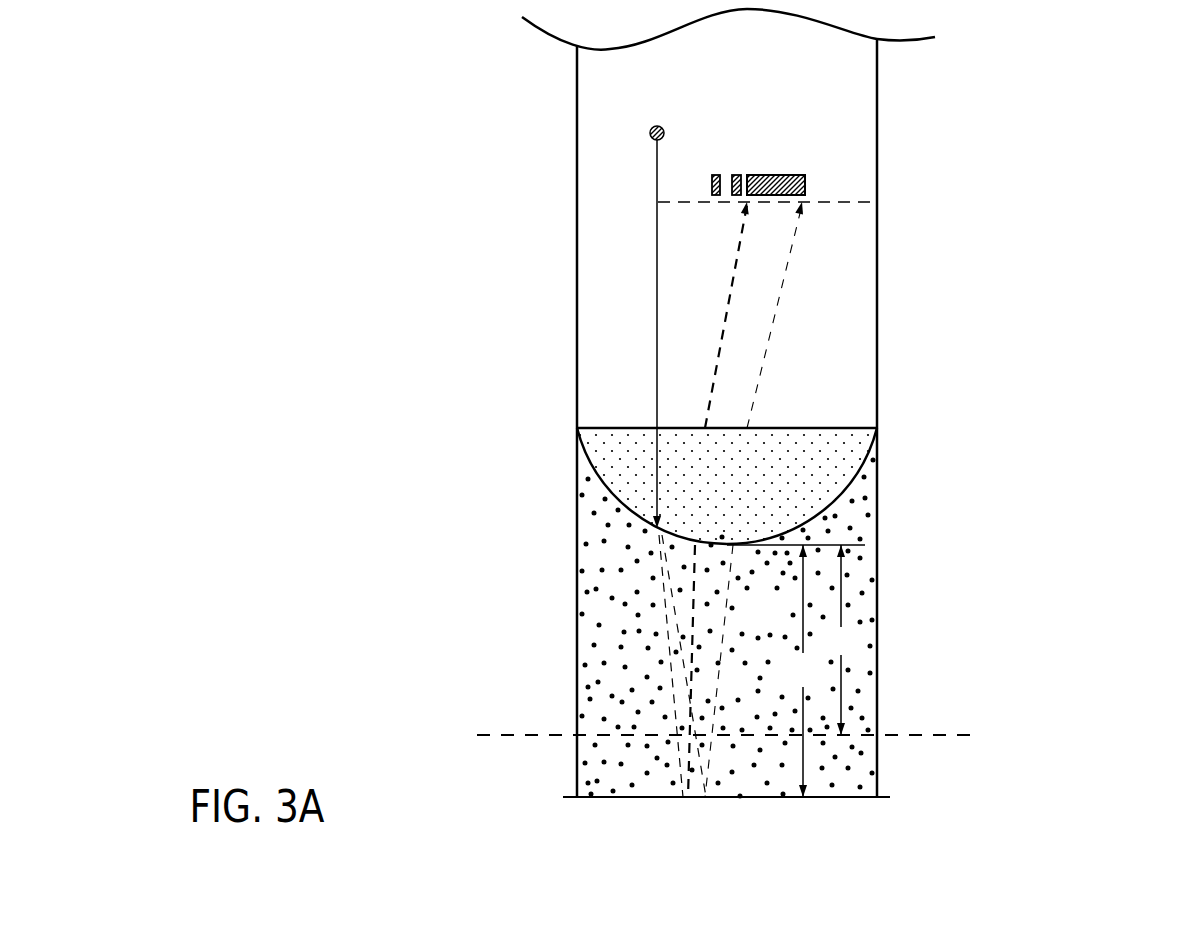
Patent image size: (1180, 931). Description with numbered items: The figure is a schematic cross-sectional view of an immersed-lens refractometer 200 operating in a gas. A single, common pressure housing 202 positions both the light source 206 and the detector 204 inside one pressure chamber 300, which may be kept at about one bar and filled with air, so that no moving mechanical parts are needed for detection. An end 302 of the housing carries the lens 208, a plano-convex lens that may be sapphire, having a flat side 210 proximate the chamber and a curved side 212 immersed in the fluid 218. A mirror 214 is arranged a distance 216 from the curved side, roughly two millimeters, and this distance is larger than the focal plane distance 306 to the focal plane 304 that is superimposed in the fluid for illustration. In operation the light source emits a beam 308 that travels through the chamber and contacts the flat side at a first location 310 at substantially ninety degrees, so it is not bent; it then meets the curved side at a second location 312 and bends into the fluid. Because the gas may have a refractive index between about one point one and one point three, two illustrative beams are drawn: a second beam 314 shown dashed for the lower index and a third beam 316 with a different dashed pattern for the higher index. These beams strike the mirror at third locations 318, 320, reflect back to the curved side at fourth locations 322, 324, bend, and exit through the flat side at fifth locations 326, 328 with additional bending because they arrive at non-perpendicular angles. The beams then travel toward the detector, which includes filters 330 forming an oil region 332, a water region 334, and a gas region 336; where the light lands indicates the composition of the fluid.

The refractometer 200 is at (1081, 149).
The pressure housing 202 is at (577, 130).
The detector 204 is at (848, 201).
The light source 206 is at (650, 131).
The lens 208 is at (880, 448).
The flat side 210 is at (600, 428).
The curved side 212 is at (582, 448).
The mirror 214 is at (850, 797).
The distance 216 is at (803, 671).
The fluid 218 is at (866, 601).
The pressure chamber 300 is at (866, 418).
The end 302 is at (900, 420).
The focal plane 304 is at (508, 737).
The focal plane distance 306 is at (796, 640).
The beam 308 is at (657, 250).
The first location 310 is at (663, 428).
The second location 312 is at (657, 528).
The second beam 314 is at (677, 735).
The third beam 316 is at (692, 797).
The third location 318 is at (682, 797).
The third location 320 is at (704, 785).
The fourth location 322 is at (697, 543).
The fourth location 324 is at (727, 546).
The fifth location 326 is at (707, 428).
The fifth location 328 is at (747, 428).
The filters 330 is at (727, 172).
The oil region 332 is at (711, 186).
The water region 334 is at (740, 174).
The gas region 336 is at (785, 174).